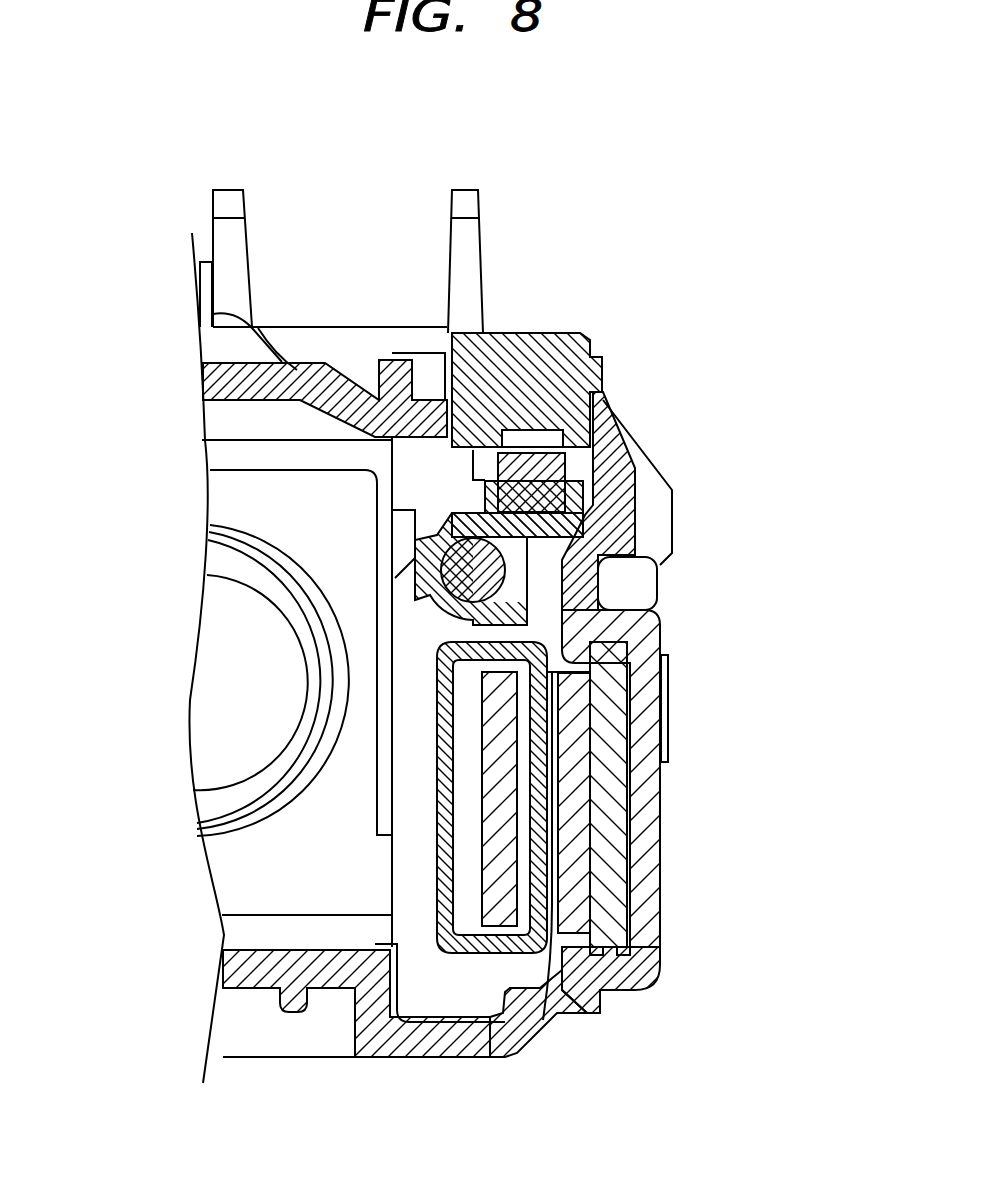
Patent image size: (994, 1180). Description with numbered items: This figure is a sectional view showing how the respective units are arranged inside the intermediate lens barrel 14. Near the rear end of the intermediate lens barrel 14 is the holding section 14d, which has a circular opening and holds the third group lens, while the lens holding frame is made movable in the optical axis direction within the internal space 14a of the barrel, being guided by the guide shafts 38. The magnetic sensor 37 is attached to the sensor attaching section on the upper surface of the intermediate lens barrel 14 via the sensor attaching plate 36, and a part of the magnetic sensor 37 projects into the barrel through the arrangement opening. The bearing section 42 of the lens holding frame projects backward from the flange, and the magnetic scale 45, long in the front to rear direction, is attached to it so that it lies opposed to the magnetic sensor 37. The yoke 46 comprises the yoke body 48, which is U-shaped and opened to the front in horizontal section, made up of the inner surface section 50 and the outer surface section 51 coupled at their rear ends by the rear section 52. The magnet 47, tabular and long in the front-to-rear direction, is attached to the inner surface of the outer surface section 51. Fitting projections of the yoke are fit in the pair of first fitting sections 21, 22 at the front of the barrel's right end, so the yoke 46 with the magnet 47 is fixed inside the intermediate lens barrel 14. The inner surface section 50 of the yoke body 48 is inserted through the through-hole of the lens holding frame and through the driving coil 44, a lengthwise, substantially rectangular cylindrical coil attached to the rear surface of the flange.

The intermediate lens barrel 14 is at (297, 373).
The internal space 14a is at (368, 873).
The holding section 14d is at (272, 748).
The sensor attaching plate 36 is at (428, 385).
The magnetic sensor 37 is at (565, 335).
The magnetic scale 45 is at (610, 472).
The guide shafts 38 is at (505, 540).
The bearing section 42 is at (657, 598).
The first fitting section 21 is at (667, 682).
The first fitting section 22 is at (658, 933).
The outer surface section 51 is at (610, 747).
The yoke 46 is at (617, 822).
The yoke body 48 is at (613, 865).
The magnet 47 is at (598, 900).
The inner surface section 50 is at (490, 800).
The driving coil 44 is at (437, 885).
The rear section 52 is at (557, 1017).